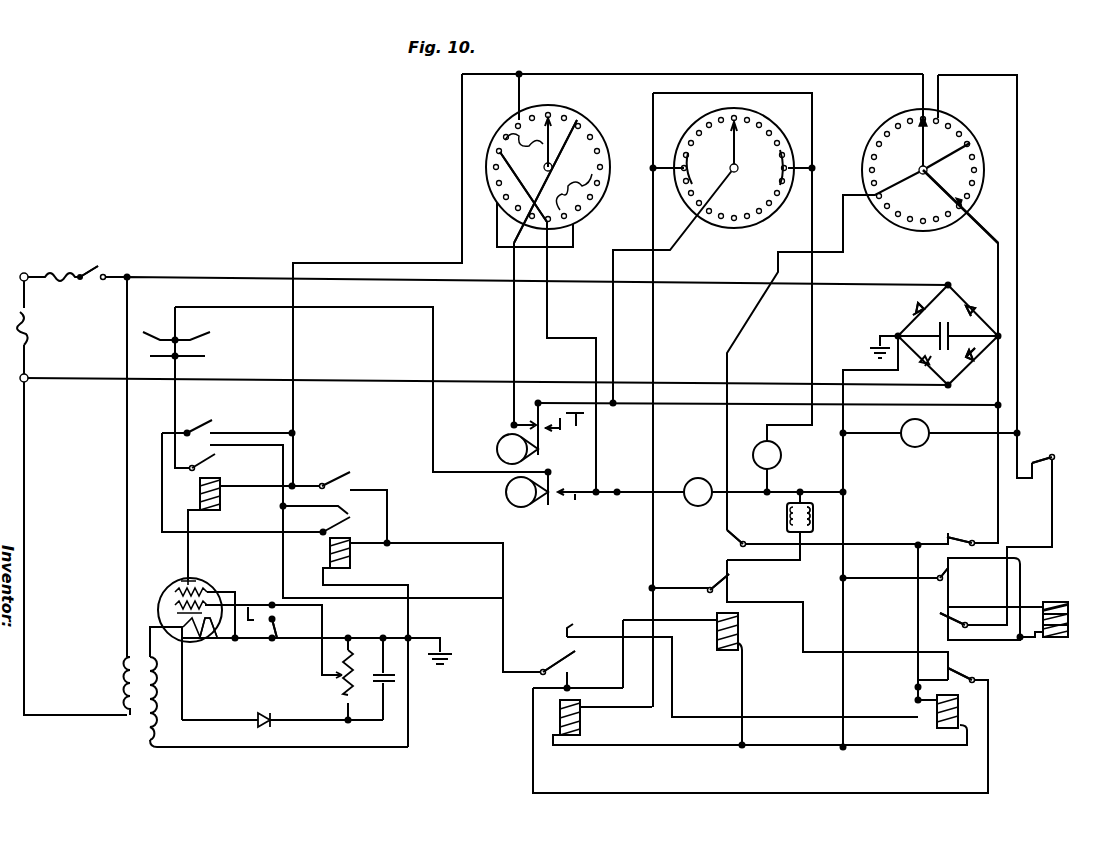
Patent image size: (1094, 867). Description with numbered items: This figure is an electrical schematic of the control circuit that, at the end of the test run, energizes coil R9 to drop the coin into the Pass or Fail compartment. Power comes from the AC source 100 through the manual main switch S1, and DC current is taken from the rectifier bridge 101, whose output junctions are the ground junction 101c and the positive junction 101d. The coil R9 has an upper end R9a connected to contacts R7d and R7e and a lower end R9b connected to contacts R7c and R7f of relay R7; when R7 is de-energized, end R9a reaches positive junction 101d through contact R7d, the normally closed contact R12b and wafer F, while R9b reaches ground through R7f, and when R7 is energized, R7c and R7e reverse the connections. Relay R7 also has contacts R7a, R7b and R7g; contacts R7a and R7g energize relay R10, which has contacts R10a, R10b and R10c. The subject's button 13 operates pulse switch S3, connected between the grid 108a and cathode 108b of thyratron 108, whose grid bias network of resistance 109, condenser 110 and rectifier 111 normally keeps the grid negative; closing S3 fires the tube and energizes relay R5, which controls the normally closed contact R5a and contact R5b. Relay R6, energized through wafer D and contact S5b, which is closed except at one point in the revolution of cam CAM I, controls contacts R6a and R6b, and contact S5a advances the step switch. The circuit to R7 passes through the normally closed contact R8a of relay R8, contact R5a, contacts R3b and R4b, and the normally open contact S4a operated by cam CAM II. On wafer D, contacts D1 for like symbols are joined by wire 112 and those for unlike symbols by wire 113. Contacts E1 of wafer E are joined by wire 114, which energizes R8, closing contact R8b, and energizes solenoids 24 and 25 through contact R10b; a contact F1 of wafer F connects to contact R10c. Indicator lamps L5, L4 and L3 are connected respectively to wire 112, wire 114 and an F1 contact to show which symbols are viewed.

The AC source 100 is at (46, 327).
The manual main switch S1 is at (93, 270).
The normally open contact of relay R3 R3b is at (213, 337).
The normally open contact of relay R4 R4b is at (154, 351).
The contact of relay R5 R5b is at (211, 425).
The normally closed contact of relay R5 R5a is at (218, 455).
The relay R5 is at (214, 506).
The normally open contact of relay R6 R6b is at (350, 478).
The normally closed contact of relay R6 R6a is at (349, 519).
The relay R6 is at (343, 537).
The thyratron 108 is at (168, 594).
The grid 108a is at (200, 596).
The cathode 108b is at (210, 640).
The button 13 is at (253, 602).
The pulse switch S3 is at (281, 622).
The resistance 109 is at (340, 690).
The condenser 110 is at (382, 688).
The rectifier 111 is at (264, 712).
The wafer D is at (510, 126).
The wire 113 is at (500, 152).
The wire 112 is at (545, 152).
The contacts of wafer D D1 is at (598, 152).
The wafer E is at (702, 123).
The contacts of wafer E E1 is at (789, 148).
The wafer F is at (957, 129).
The contacts of wafer F F1 is at (978, 196).
The wire 114 is at (748, 93).
The ground output junction 101c is at (898, 334).
The positive output junction 101d is at (997, 330).
The rectifier bridge 101 is at (977, 363).
The indicator lamp L3 is at (915, 433).
The indicator lamp L4 is at (767, 455).
The indicator lamp L5 is at (698, 492).
The normally closed contact of relay R12 R12b is at (1033, 460).
The contact S5b is at (528, 420).
The cam I CAM I is at (492, 443).
The contact S5a is at (564, 435).
The cam II CAM II is at (499, 491).
The normally open contact S4a is at (572, 498).
The solenoid 24 is at (787, 518).
The solenoid 25 is at (813, 518).
The normally closed contact of relay R10 R10c is at (731, 526).
The normally closed contact of relay R10 R10b is at (731, 574).
The contact of relay R10 R10a is at (732, 595).
The relay R10 is at (738, 621).
The normally closed contact of relay R8 R8a is at (572, 646).
The normally open contact of relay R8 R8b is at (563, 680).
The relay R8 is at (586, 717).
The normally open contact of relay R7 R7g is at (952, 528).
The normally closed contact of relay R7 R7f is at (952, 564).
The normally open contact of relay R7 R7e is at (952, 594).
The normally closed contact of relay R7 R7d is at (939, 616).
The normally open contact of relay R7 R7c is at (941, 635).
The normally closed contact of relay R7 R7b is at (955, 666).
The normally open contact of relay R7 R7a is at (945, 676).
The relay R7 is at (940, 726).
The upper end of coil R9 R9a is at (1057, 606).
The lower end of coil R9 R9b is at (1054, 632).
The coil R9 is at (1043, 640).